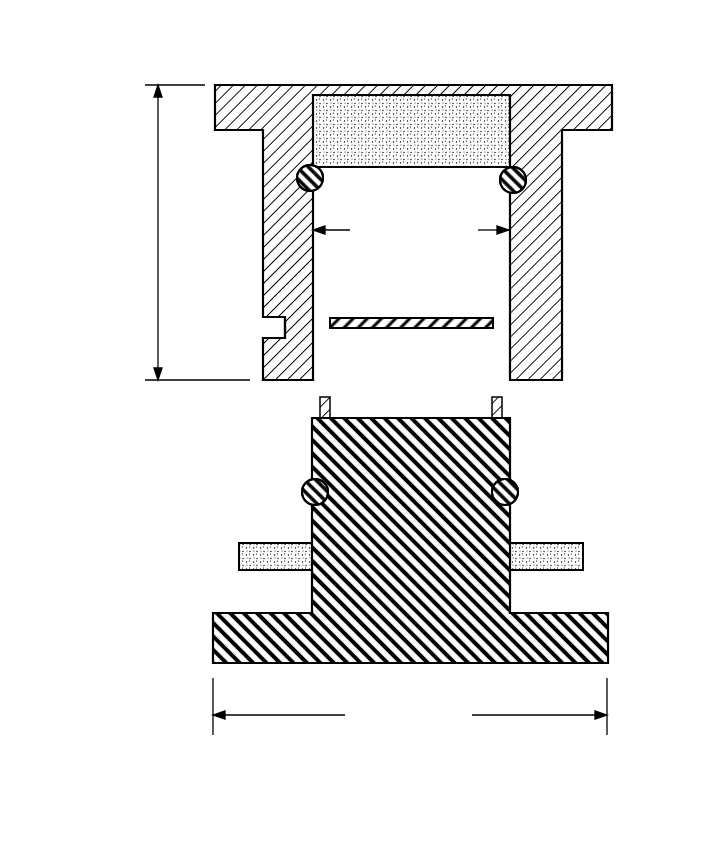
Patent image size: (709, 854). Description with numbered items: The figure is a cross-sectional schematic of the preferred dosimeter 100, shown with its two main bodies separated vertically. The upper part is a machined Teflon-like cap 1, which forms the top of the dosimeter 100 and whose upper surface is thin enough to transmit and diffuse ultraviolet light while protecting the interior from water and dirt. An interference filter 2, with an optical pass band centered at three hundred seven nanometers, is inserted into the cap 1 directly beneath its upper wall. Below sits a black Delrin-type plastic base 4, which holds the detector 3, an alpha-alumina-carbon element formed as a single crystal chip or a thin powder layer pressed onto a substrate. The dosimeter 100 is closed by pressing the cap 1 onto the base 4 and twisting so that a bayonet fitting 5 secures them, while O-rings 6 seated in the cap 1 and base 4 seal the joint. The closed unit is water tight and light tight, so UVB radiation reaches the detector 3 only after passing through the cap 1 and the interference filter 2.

The dosimeter 100 is at (638, 680).
The cap 1 is at (263, 193).
The interference filter 2 is at (437, 113).
The detector 3 is at (405, 317).
The base 4 is at (588, 613).
The bayonet fitting 5 is at (268, 327).
The O-rings 6 is at (523, 183).